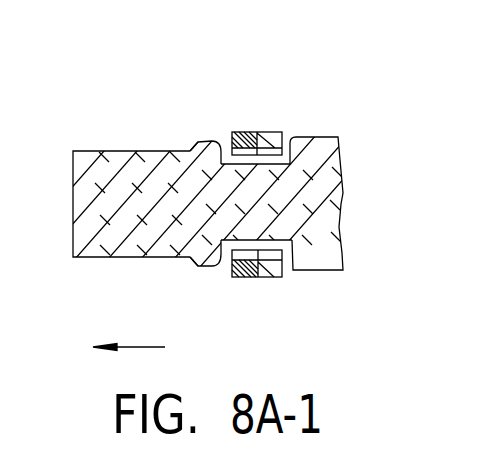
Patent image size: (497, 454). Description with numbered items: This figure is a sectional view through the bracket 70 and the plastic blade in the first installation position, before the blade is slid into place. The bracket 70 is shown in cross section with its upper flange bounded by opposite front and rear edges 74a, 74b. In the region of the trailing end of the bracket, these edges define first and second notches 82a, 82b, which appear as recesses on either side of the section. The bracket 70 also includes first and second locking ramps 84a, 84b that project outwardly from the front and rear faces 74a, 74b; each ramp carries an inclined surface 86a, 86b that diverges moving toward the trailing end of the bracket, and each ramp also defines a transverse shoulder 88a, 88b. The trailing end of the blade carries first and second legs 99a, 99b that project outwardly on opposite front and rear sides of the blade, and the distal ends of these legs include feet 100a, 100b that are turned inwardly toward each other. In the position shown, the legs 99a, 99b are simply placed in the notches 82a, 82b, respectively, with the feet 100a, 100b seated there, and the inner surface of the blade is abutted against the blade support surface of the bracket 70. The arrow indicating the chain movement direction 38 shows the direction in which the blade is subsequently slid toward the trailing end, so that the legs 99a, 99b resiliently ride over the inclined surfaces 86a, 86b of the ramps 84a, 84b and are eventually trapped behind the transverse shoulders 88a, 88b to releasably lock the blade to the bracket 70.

The chain movement direction 38 is at (142, 348).
The bracket 70 is at (330, 193).
The front edge of upper flange 74a is at (128, 258).
The rear edge of upper flange 74b is at (100, 150).
The first notch 82a is at (289, 271).
The second notch 82b is at (290, 138).
The first locking ramp 84a is at (216, 273).
The second locking ramp 84b is at (215, 133).
The inclined surface of first ramp 86a is at (202, 266).
The inclined surface of second ramp 86b is at (214, 141).
The transverse shoulder of first ramp 88a is at (190, 257).
The transverse shoulder of second ramp 88b is at (198, 141).
The first leg 99a is at (275, 278).
The second leg 99b is at (275, 131).
The foot of first leg 100a is at (260, 278).
The foot of second leg 100b is at (263, 131).